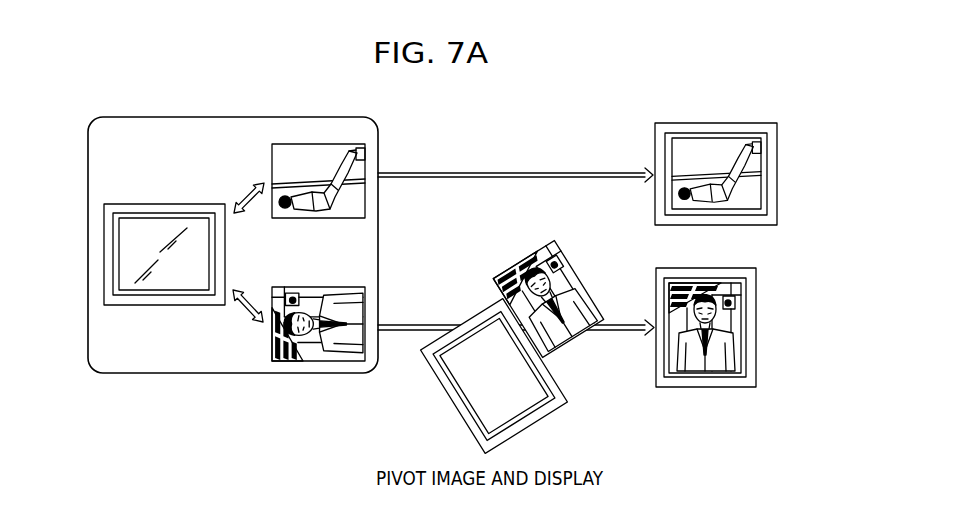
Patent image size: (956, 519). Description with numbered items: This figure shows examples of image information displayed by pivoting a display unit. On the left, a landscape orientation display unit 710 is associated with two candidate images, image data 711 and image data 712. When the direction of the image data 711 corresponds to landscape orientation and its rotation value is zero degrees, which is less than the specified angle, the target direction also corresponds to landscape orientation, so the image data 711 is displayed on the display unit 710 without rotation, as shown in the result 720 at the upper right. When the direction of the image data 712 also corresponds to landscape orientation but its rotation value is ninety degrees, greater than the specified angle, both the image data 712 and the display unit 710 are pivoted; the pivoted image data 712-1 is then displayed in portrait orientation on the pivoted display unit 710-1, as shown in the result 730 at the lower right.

The display unit 710 is at (185, 204).
The image data 711 is at (325, 144).
The image data 712 is at (325, 287).
The displayed result 720 is at (738, 123).
The displayed result 730 is at (722, 268).
The pivoted display unit 710-1 is at (551, 373).
The pivoted image data 712-1 is at (578, 273).